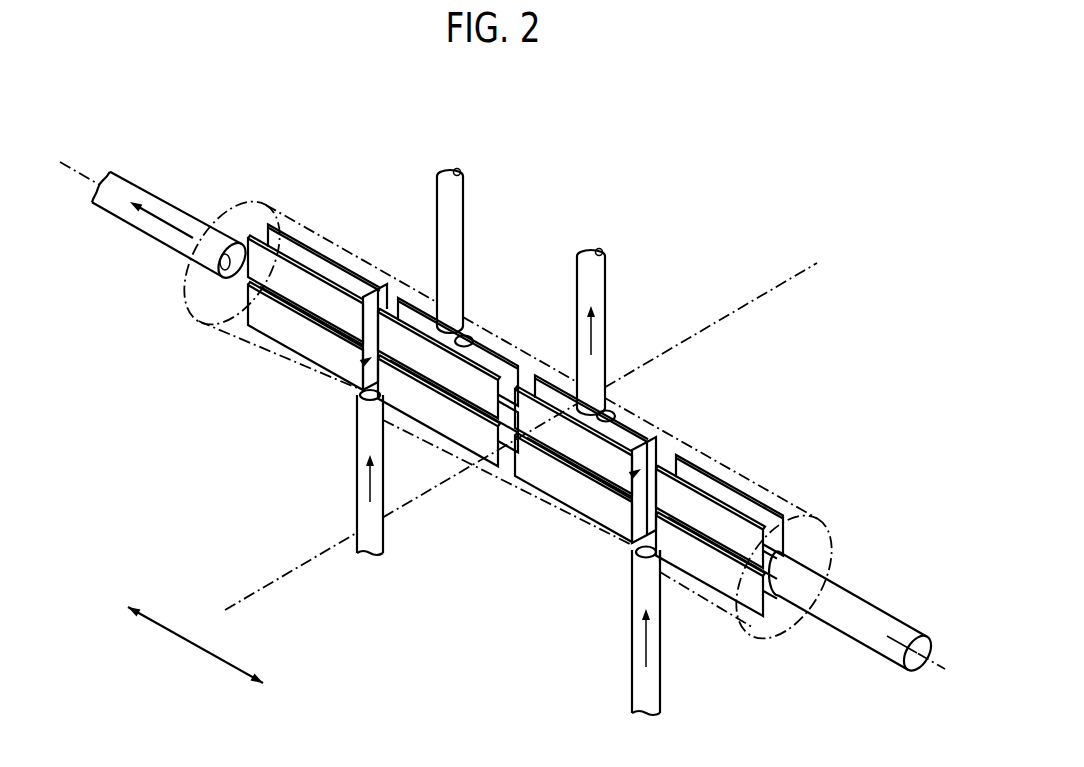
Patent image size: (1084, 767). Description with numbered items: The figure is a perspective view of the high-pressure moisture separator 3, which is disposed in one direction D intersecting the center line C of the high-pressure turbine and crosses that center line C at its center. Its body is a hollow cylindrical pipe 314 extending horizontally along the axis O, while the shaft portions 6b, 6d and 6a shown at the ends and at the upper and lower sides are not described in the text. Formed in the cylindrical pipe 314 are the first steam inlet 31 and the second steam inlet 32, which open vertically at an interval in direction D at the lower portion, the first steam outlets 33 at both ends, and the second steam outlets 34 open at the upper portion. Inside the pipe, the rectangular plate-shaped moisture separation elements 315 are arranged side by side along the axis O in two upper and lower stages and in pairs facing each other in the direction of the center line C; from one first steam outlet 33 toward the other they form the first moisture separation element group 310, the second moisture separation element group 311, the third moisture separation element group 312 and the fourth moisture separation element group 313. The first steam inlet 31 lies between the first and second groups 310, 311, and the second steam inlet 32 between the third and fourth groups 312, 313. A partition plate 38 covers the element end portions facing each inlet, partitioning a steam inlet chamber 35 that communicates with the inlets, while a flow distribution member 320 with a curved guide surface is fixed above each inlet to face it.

The high-pressure moisture separator 3 is at (565, 207).
The axis O is at (84, 170).
The center line C is at (778, 299).
The one direction D is at (185, 646).
The shaft 6b is at (122, 218).
The No. 1 steam outlet 33 is at (202, 318).
The moisture separation element 315 is at (493, 370).
The first moisture separation element group 310 is at (313, 290).
The second moisture separation element group 311 is at (413, 347).
The third moisture separation element group 312 is at (576, 497).
The fourth moisture separation element group 313 is at (723, 493).
The cylindrical pipe 314 is at (246, 300).
The No. 1 steam inlet 31 is at (383, 432).
The partition plate 38 is at (373, 303).
The steam inlet chamber 35 is at (360, 363).
The upper lead 6d is at (463, 205).
The lower lead 6a is at (358, 520).
The No. 2 steam outlet 34 is at (470, 345).
The flow distribution member 320 is at (355, 395).
The No. 2 steam inlet 32 is at (657, 560).